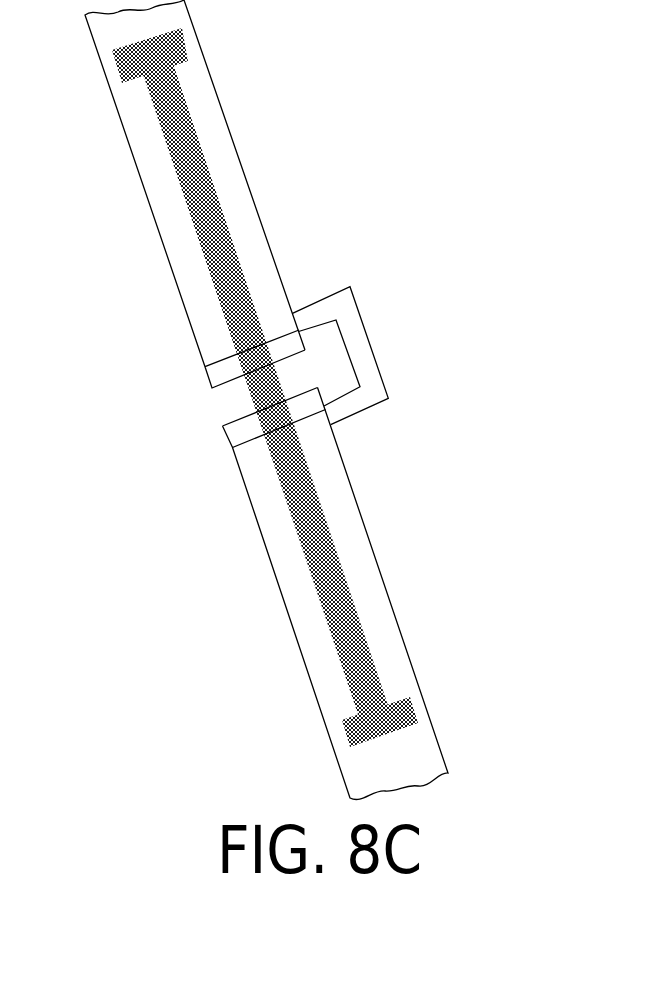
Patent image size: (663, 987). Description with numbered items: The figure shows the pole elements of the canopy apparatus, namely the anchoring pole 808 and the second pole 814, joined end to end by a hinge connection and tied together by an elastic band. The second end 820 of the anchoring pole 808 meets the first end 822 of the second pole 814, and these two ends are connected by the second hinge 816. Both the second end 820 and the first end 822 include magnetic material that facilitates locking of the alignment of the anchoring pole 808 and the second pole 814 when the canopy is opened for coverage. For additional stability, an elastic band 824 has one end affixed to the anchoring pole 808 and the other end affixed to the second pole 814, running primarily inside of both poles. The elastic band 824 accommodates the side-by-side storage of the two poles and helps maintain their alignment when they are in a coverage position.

The anchoring pole 808 is at (375, 553).
The second pole 814 is at (236, 149).
The second hinge 816 is at (366, 331).
The second end of anchoring pole 820 is at (226, 441).
The first end of second pole 822 is at (208, 384).
The elastic band 824 is at (189, 115).